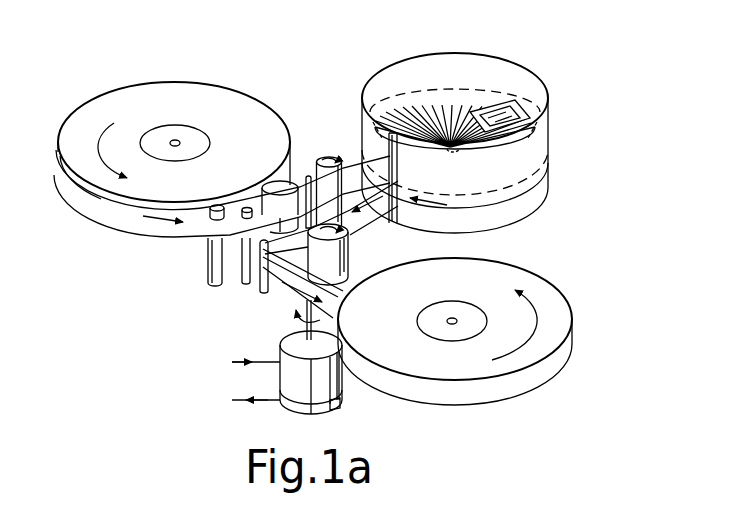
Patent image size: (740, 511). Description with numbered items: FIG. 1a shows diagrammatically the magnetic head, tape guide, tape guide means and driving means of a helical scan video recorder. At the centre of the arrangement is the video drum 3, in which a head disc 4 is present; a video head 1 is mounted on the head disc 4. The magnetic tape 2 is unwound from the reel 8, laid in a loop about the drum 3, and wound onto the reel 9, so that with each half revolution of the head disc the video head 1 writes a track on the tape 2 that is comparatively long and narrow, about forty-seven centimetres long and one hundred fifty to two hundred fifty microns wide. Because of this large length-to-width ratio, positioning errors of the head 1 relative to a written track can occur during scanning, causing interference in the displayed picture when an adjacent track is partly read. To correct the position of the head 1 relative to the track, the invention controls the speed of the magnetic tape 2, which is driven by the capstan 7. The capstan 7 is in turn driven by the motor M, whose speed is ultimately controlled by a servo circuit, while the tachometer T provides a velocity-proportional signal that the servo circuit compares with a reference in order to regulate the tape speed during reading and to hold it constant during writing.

The video head 1 is at (492, 110).
The magnetic tape 2 is at (190, 228).
The video drum 3 is at (455, 70).
The head disc 4 is at (412, 120).
The capstan 7 is at (308, 176).
The reel 8 is at (118, 104).
The reel 9 is at (550, 308).
The motor M is at (295, 343).
The tachometer T is at (338, 407).